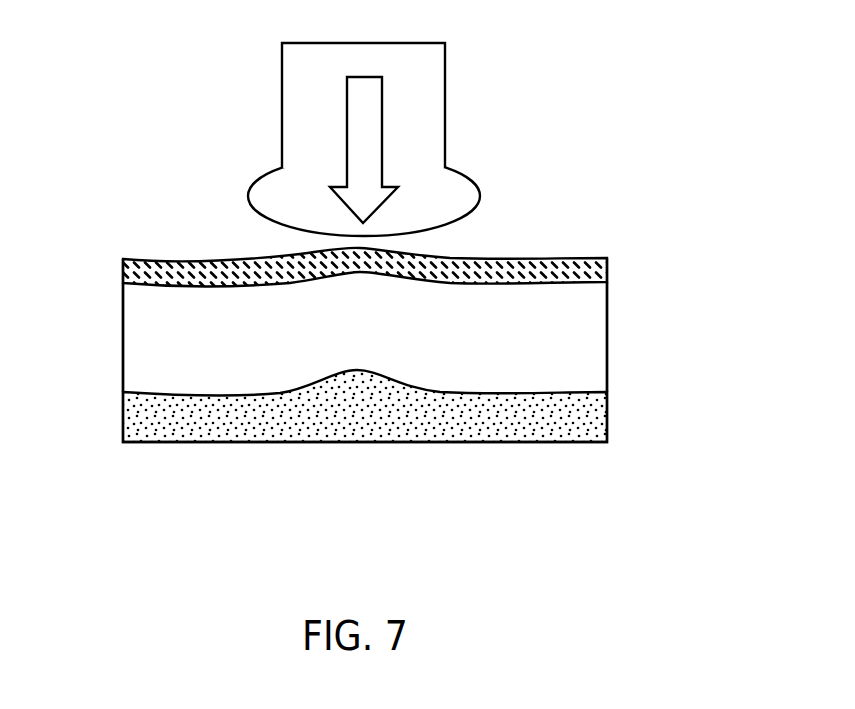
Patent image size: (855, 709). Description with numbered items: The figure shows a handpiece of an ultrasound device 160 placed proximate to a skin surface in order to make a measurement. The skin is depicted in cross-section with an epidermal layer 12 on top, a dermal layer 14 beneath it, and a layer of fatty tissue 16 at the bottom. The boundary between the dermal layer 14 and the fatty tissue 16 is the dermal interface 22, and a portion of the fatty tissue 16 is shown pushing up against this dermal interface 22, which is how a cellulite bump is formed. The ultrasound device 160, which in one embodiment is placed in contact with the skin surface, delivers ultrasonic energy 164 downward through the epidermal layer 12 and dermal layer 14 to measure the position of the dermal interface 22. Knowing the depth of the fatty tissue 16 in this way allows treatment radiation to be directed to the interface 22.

The ultrasound device 160 is at (420, 73).
The ultrasonic energy 164 is at (382, 148).
The dermal interface 22 is at (106, 392).
The epidermal layer 12 is at (583, 273).
The dermal layer 14 is at (584, 351).
The fatty tissue 16 is at (171, 423).